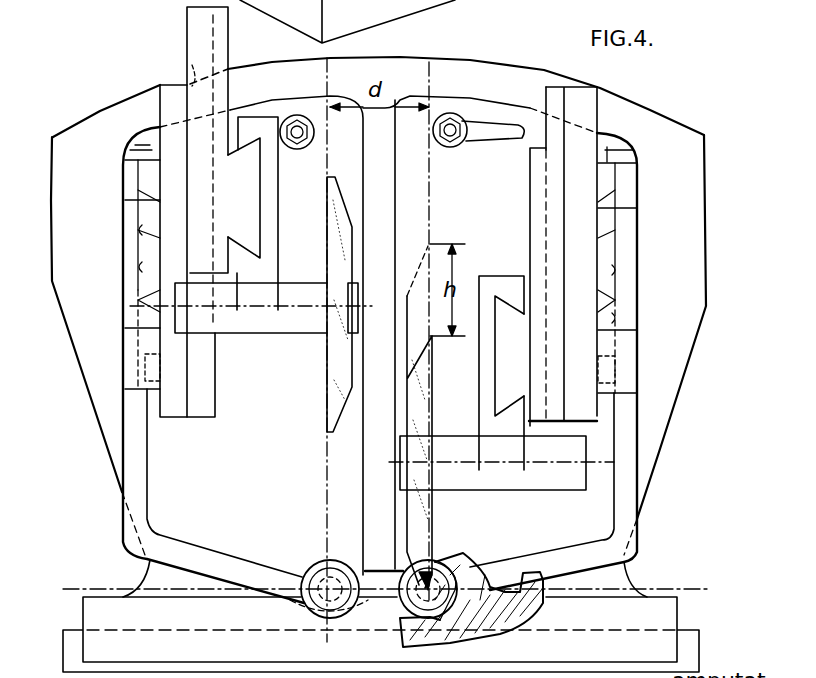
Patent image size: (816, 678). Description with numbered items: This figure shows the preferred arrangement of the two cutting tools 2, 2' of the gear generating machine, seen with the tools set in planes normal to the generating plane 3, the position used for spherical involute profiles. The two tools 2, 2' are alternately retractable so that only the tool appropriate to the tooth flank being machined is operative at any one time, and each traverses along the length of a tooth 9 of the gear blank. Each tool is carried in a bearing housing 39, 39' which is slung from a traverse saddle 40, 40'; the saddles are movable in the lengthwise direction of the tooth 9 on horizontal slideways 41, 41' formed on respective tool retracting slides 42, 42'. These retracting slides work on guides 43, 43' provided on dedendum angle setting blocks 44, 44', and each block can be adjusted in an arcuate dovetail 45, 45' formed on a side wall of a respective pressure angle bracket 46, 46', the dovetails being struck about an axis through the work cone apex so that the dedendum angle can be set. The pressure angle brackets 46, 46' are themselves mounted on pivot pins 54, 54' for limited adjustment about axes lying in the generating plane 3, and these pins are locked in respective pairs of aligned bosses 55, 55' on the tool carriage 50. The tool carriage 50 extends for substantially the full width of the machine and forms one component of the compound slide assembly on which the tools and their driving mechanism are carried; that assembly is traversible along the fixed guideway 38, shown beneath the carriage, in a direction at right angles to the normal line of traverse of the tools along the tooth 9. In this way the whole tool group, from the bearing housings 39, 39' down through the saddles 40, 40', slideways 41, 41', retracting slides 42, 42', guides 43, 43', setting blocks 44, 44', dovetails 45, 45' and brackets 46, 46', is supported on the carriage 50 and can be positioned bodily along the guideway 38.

The tool 2 is at (433, 331).
The tool 2' is at (321, 350).
The generating plane 3 is at (386, 578).
The tooth 9 is at (458, 552).
The fixed guideway 38 is at (687, 634).
The bearing housing 39 is at (501, 478).
The bearing housing 39' is at (251, 327).
The traverse saddle 40 is at (504, 331).
The traverse saddle 40' is at (274, 202).
The horizontal slideway 41 is at (484, 373).
The horizontal slideway 41' is at (279, 213).
The tool retracting slide 42 is at (519, 287).
The tool retracting slide 42' is at (187, 212).
The guide 43 is at (531, 246).
The guide 43' is at (209, 218).
The dedendum angle setting block 44 is at (567, 236).
The dedendum angle setting block 44' is at (166, 251).
The arcuate dovetail 45 is at (638, 256).
The arcuate dovetail 45' is at (124, 251).
The pressure angle bracket 46 is at (527, 329).
The pressure angle bracket 46' is at (243, 336).
The tool carriage 50 is at (488, 62).
The pivot pin 54 is at (414, 593).
The pivot pin 54' is at (329, 575).
The aligned bosses 55 is at (411, 575).
The aligned bosses 55' is at (339, 568).